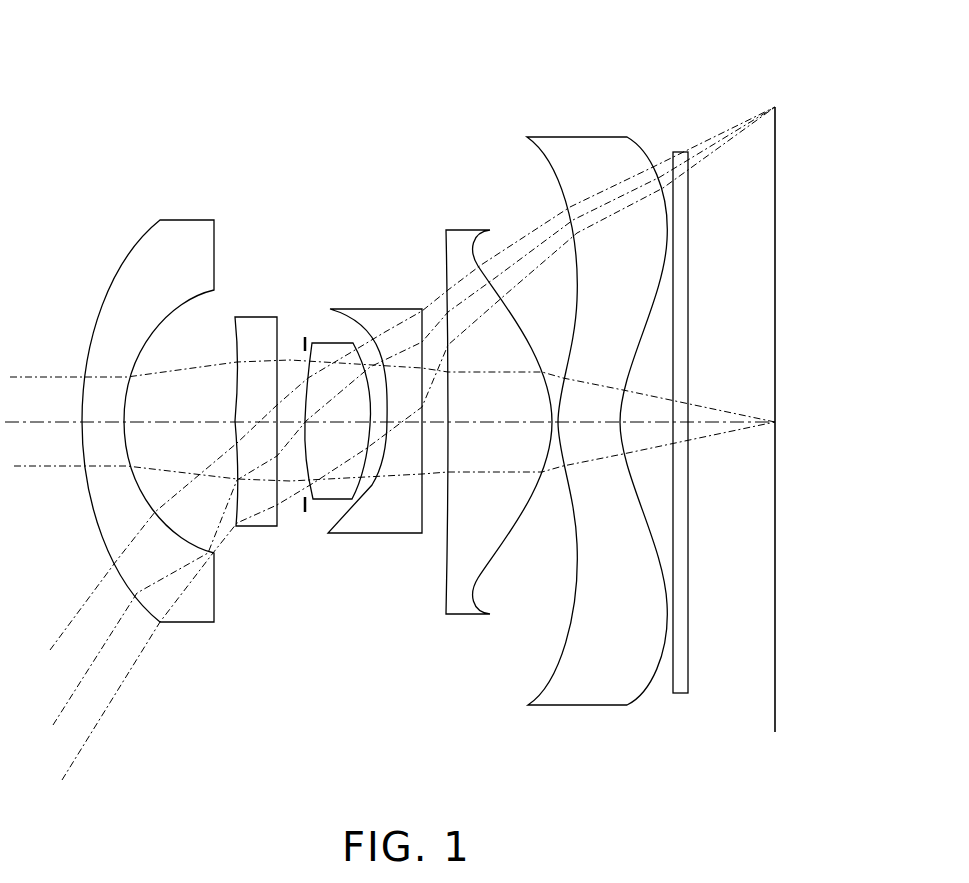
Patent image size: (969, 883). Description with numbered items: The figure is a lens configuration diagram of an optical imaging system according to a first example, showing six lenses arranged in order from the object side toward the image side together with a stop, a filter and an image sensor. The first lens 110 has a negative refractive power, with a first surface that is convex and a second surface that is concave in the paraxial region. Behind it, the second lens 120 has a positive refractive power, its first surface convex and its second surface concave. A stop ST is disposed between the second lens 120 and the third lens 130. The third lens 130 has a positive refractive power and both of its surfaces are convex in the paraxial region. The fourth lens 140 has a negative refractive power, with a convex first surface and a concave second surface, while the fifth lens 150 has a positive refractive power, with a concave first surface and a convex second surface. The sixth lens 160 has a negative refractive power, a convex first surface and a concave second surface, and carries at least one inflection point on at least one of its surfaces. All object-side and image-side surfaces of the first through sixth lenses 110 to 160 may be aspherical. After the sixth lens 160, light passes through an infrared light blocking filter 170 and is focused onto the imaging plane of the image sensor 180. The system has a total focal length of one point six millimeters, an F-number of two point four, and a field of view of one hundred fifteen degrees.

The first lens 110 is at (183, 230).
The second lens 120 is at (258, 325).
The third lens 130 is at (320, 342).
The fourth lens 140 is at (375, 314).
The fifth lens 150 is at (463, 237).
The sixth lens 160 is at (592, 147).
The infrared light blocking filter 170 is at (686, 197).
The image sensor 180 is at (779, 124).
The stop ST is at (304, 500).